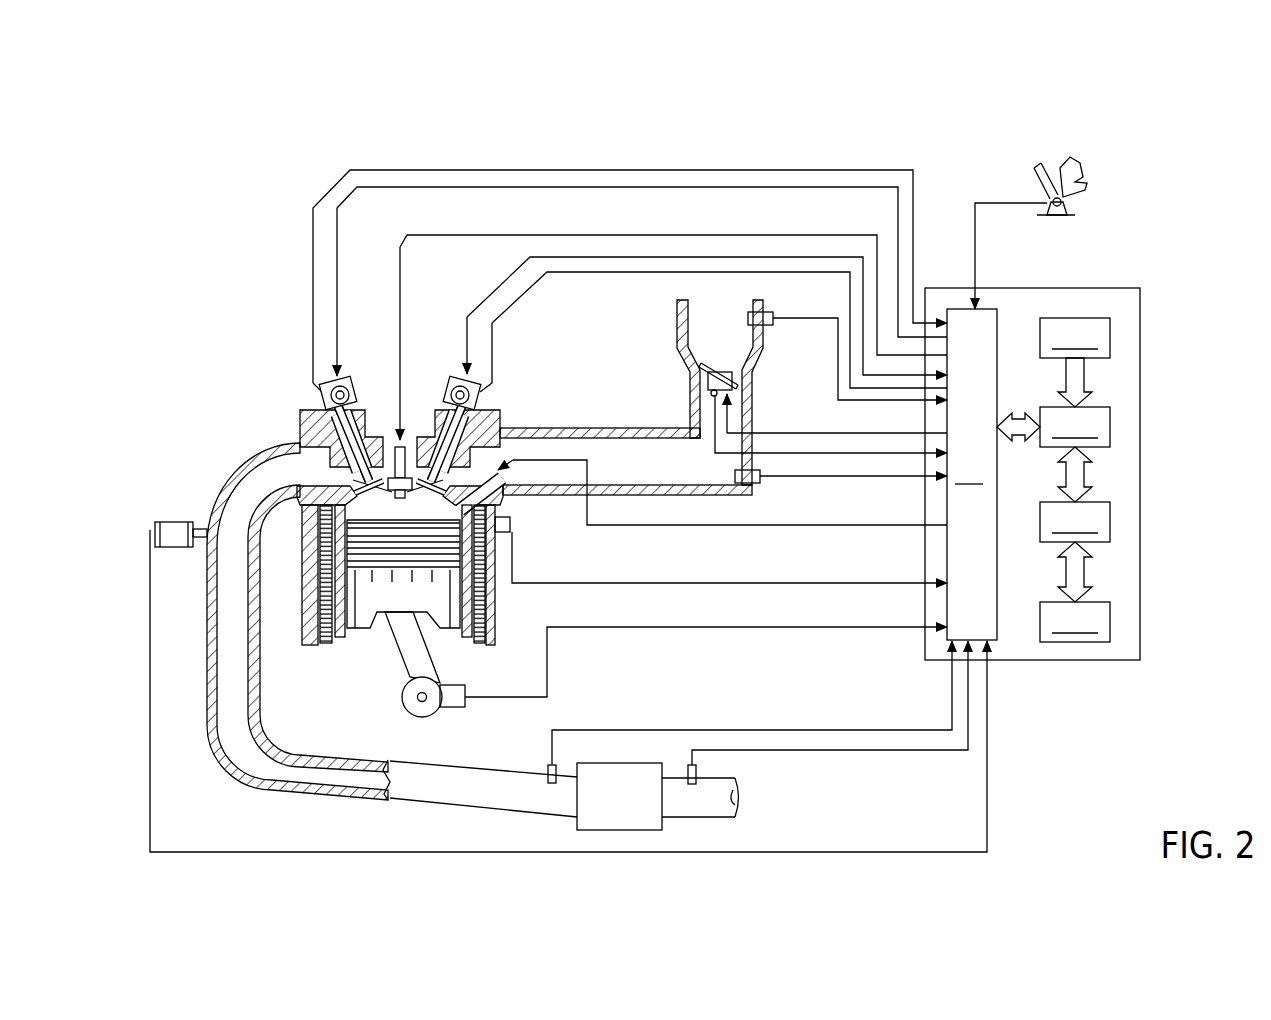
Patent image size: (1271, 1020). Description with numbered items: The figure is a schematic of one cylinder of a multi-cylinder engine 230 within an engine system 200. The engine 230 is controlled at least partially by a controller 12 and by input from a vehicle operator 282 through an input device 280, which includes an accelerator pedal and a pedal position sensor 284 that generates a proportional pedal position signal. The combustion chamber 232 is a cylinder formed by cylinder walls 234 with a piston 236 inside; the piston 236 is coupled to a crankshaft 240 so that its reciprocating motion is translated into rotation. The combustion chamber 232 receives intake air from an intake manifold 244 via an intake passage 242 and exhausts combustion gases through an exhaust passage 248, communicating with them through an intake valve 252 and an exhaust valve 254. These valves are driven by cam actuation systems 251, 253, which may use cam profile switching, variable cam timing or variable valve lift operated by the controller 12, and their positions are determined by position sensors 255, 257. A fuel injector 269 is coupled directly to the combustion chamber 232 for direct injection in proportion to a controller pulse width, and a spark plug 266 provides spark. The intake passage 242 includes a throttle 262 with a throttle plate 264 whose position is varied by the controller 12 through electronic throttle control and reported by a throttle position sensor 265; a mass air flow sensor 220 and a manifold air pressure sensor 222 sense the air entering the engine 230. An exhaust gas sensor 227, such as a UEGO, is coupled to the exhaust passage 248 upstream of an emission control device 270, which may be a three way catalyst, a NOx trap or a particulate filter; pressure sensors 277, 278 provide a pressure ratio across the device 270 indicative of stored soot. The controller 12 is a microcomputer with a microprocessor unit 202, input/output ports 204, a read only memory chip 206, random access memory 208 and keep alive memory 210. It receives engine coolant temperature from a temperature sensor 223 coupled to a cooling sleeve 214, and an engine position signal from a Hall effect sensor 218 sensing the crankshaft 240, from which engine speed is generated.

The engine system 200 is at (1172, 101).
The controller 12 is at (1140, 290).
The input/output ports 204 is at (998, 320).
The read only memory chip 206 is at (1110, 335).
The microprocessor unit 202 is at (1110, 420).
The random access memory 208 is at (1110, 520).
The keep alive memory 210 is at (1110, 618).
The input device 280 is at (1032, 182).
The vehicle operator 282 is at (1085, 168).
The pedal position sensor 284 is at (1067, 206).
The mass air flow sensor 220 is at (765, 312).
The intake passage 242 is at (703, 344).
The throttle 262 is at (742, 372).
The throttle plate 264 is at (700, 368).
The throttle position sensor 265 is at (712, 393).
The manifold air pressure sensor 222 is at (760, 483).
The intake manifold 244 is at (623, 473).
The exhaust passage 248 is at (258, 481).
The exhaust gas sensor 227 is at (155, 527).
The engine 230 is at (246, 367).
The cam actuation system 253 is at (350, 379).
The cam actuation system 251 is at (456, 378).
The position sensor 257 is at (330, 400).
The exhaust valve 254 is at (357, 480).
The position sensor 255 is at (481, 396).
The spark plug 266 is at (408, 423).
The intake valve 252 is at (510, 462).
The fuel injector 269 is at (502, 507).
The combustion chamber 232 is at (308, 610).
The cooling sleeve 214 is at (488, 640).
The temperature sensor 223 is at (510, 531).
The cylinder walls 234 is at (347, 635).
The piston 236 is at (385, 600).
The crankshaft 240 is at (413, 712).
The Hall effect sensor 218 is at (460, 708).
The emission control device 270 is at (658, 796).
The pressure sensor 277 is at (554, 766).
The pressure sensor 278 is at (696, 775).